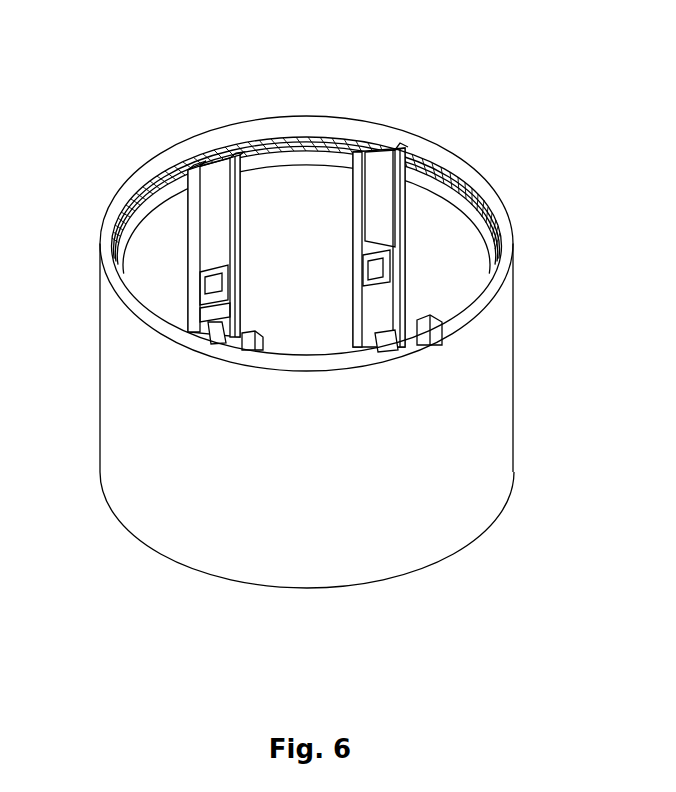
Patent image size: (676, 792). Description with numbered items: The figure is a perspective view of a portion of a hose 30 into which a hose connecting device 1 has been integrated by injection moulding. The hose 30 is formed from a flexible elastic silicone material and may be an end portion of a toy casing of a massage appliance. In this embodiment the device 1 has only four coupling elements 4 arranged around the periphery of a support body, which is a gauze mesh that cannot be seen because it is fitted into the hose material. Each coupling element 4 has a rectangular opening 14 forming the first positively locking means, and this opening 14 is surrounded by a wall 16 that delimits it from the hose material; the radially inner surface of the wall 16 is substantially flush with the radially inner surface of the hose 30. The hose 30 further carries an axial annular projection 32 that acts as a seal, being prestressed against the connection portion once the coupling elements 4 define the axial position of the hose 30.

The device 1 is at (498, 127).
The coupling elements 4 is at (400, 152).
The opening 14 is at (214, 287).
The wall 16 is at (196, 270).
The hose 30 is at (227, 119).
The axial annular projection 32 is at (305, 117).